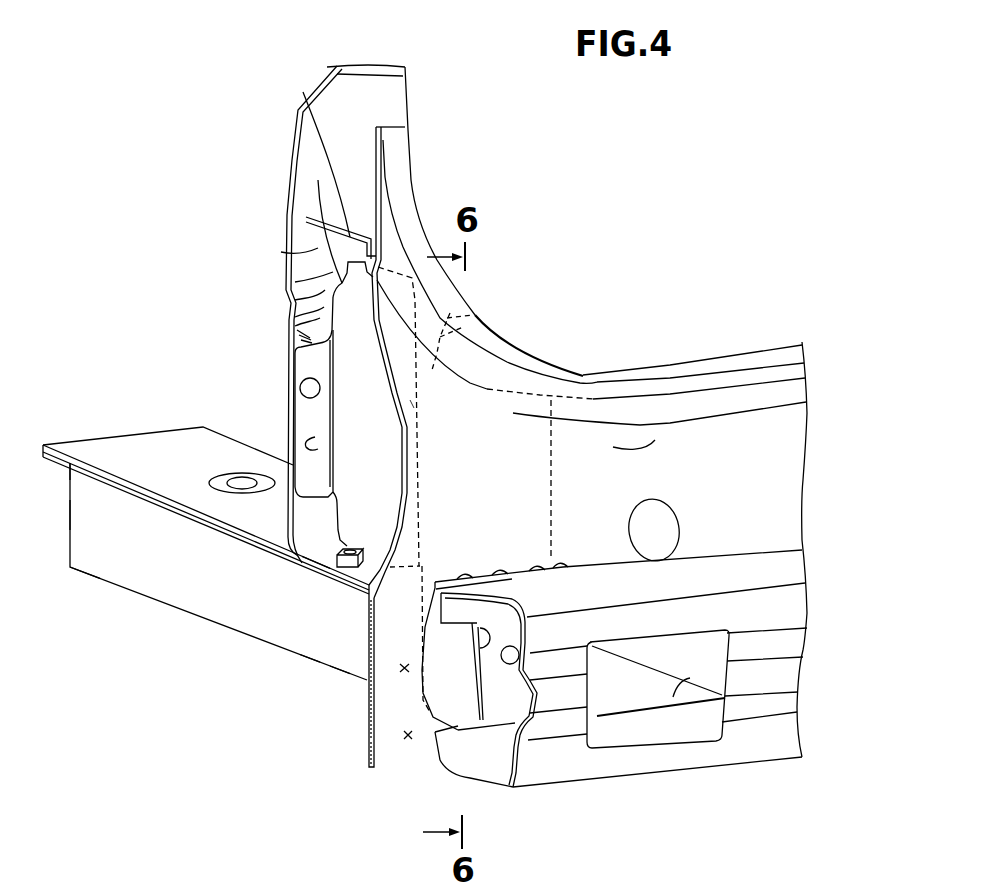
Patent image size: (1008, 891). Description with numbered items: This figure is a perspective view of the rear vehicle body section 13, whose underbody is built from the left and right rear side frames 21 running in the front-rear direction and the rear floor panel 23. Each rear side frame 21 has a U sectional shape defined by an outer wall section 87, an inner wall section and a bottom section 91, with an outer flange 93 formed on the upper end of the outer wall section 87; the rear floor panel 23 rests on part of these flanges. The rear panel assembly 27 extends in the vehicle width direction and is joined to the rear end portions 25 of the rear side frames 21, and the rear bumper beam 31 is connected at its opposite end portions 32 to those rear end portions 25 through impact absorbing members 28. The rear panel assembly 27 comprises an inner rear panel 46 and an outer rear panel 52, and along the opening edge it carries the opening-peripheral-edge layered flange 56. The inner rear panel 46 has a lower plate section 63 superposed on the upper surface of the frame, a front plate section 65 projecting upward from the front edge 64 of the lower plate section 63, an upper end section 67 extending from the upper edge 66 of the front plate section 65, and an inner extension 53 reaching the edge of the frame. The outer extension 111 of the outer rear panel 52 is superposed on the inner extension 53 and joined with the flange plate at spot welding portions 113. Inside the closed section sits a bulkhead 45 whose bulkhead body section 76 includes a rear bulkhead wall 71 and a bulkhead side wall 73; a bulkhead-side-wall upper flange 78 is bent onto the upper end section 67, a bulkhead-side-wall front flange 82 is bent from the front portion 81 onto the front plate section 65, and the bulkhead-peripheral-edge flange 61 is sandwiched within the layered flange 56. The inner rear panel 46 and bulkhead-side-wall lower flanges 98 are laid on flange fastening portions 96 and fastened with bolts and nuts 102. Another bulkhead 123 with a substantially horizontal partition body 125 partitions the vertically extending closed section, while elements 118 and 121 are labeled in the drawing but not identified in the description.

The rear vehicle body section 13 is at (158, 203).
The rear side frame 21 is at (127, 597).
The rear floor panel 23 is at (170, 447).
The rear end portion 25 is at (320, 650).
The rear panel assembly 27 is at (483, 172).
The impact absorbing member 28 is at (451, 688).
The rear bumper beam 31 is at (710, 557).
The opposite end portion 32 is at (607, 767).
The bulkhead 45 is at (293, 323).
The inner rear panel 46 is at (287, 227).
The outer rear panel 52 is at (655, 440).
The inner extension 53 is at (367, 710).
The opening-peripheral-edge layered flange 56 is at (693, 363).
The bulkhead-peripheral-edge flange 61 is at (573, 380).
The lower plate section 63 is at (313, 580).
The front edge 64 is at (297, 543).
The front plate section 65 is at (287, 347).
The upper edge 66 is at (313, 270).
The upper end section 67 is at (341, 269).
The rear bulkhead wall 71 is at (420, 410).
The bulkhead side wall 73 is at (363, 383).
The bulkhead body section 76 is at (336, 509).
The bulkhead-side-wall upper flange 78 is at (312, 215).
The front portion 81 is at (343, 420).
The bulkhead-side-wall front flange 82 is at (313, 441).
The outer wall section 87 is at (68, 515).
The bottom section 91 is at (97, 577).
The outer flange 93 is at (92, 476).
The flange fastening portion 96 is at (337, 633).
The bulkhead-side-wall lower flange 98 is at (367, 562).
The nut 102 is at (347, 546).
The outer extension 111 is at (387, 720).
The spot welding portion 113 is at (393, 670).
The curved edge 118 is at (553, 367).
The pillar outer 121 is at (420, 225).
The other bulkhead 123 is at (328, 216).
The partition body 125 is at (350, 235).